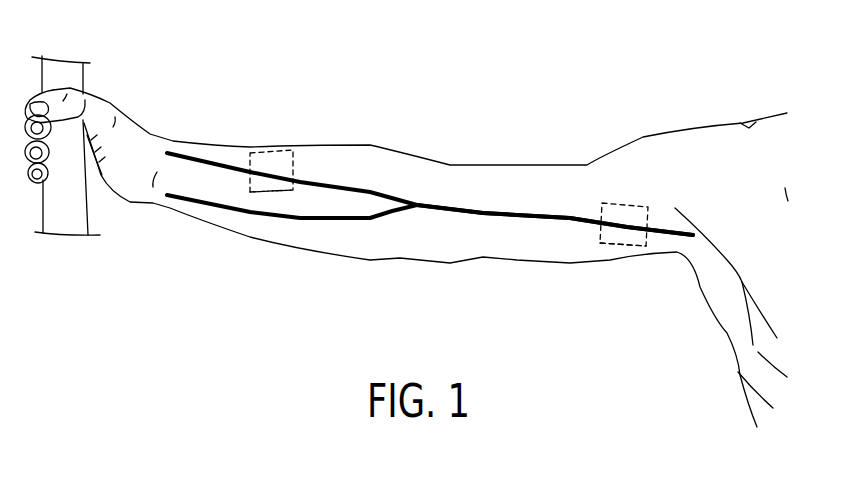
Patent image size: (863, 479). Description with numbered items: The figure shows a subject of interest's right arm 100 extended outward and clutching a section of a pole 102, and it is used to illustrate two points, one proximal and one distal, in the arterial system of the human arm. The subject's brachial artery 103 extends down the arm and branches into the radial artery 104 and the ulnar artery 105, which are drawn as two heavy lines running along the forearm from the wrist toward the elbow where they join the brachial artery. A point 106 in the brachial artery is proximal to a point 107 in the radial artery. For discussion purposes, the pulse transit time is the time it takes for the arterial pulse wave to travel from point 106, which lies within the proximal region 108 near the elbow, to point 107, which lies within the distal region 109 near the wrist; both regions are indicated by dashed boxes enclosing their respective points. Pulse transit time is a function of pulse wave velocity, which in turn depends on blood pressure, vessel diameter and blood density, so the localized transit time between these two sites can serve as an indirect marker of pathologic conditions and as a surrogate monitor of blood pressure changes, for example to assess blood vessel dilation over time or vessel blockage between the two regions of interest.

The right arm 100 is at (393, 145).
The pole 102 is at (86, 80).
The brachial artery 103 is at (530, 215).
The radial artery 104 is at (217, 167).
The ulnar artery 105 is at (297, 222).
The point in the brachial artery 106 is at (626, 229).
The point in the radial artery 107 is at (280, 168).
The proximal region 108 is at (643, 200).
The distal region 109 is at (260, 197).